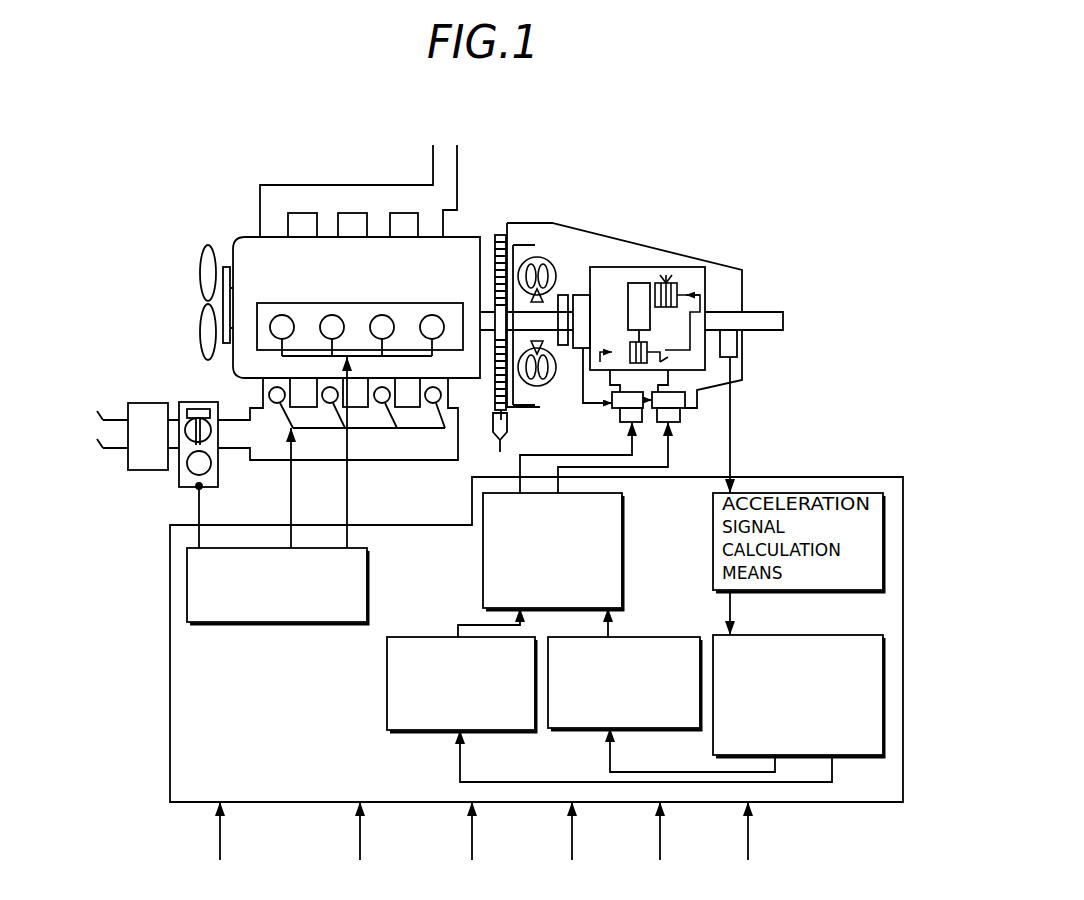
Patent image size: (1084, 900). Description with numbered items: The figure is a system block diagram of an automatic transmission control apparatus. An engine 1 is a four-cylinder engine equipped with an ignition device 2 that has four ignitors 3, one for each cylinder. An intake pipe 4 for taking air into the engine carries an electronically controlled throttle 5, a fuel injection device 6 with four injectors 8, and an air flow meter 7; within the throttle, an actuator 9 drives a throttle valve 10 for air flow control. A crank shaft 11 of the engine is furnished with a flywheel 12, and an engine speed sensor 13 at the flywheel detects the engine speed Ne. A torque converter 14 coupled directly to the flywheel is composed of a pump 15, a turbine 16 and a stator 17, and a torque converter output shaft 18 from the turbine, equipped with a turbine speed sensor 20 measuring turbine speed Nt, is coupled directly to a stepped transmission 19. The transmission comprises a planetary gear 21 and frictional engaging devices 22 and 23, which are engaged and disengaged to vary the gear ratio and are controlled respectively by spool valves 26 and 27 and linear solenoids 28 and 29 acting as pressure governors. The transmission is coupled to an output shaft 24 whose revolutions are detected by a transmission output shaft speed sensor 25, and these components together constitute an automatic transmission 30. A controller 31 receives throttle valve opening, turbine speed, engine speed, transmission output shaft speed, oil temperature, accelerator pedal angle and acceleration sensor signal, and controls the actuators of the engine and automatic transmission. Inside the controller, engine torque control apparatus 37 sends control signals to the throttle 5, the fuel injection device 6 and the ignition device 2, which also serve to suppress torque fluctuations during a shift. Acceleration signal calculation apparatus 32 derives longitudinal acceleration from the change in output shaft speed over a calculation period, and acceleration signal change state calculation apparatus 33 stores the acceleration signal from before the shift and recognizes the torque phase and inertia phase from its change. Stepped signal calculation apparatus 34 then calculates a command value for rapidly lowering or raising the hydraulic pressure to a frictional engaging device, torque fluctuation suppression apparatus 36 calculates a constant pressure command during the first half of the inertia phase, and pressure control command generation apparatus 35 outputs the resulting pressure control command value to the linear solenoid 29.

The engine 1 is at (256, 238).
The ignition device 2 is at (402, 348).
The ignitors 3 is at (282, 303).
The intake pipe 4 is at (325, 455).
The electronically controlled throttle 5 is at (188, 402).
The fuel injection device 6 is at (447, 430).
The air flow meter 7 is at (148, 403).
The injectors 8 is at (448, 395).
The actuator 9 is at (178, 480).
The throttle valve 10 is at (203, 428).
The crank shaft 11 is at (502, 236).
The flywheel 12 is at (517, 247).
The engine speed sensor 13 is at (500, 452).
The torque converter 14 is at (548, 312).
The pump 15 is at (552, 388).
The turbine 16 is at (517, 380).
The stator 17 is at (560, 378).
The torque converter output shaft 18 is at (566, 296).
The stepped transmission 19 is at (634, 283).
The turbine speed sensor 20 is at (586, 296).
The planetary gear 21 is at (660, 283).
The frictional engaging device 22 is at (670, 275).
The frictional engaging device 23 is at (648, 346).
The output shaft 24 is at (782, 330).
The transmission output shaft speed sensor 25 is at (736, 352).
The spool valve 26 is at (624, 402).
The spool valve 27 is at (690, 404).
The linear solenoid 28 is at (633, 418).
The linear solenoid 29 is at (673, 418).
The automatic transmission 30 is at (527, 222).
The controller 31 is at (832, 802).
The acceleration signal calculation apparatus 32 is at (850, 477).
The acceleration signal change state calculation apparatus 33 is at (862, 757).
The stepped signal calculation apparatus 34 is at (440, 733).
The pressure control command generation apparatus 35 is at (483, 598).
The torque fluctuation suppression apparatus 36 is at (578, 731).
The engine torque control apparatus 37 is at (218, 625).